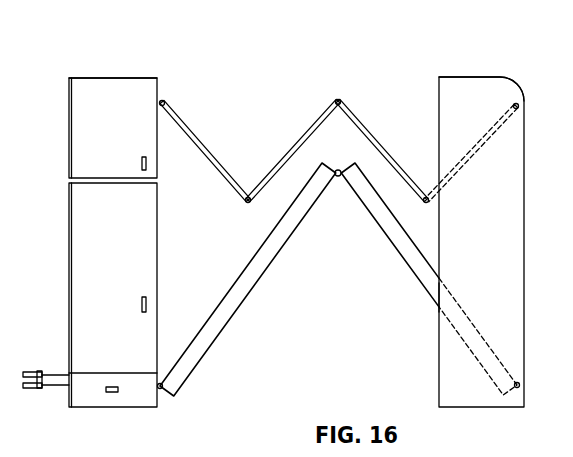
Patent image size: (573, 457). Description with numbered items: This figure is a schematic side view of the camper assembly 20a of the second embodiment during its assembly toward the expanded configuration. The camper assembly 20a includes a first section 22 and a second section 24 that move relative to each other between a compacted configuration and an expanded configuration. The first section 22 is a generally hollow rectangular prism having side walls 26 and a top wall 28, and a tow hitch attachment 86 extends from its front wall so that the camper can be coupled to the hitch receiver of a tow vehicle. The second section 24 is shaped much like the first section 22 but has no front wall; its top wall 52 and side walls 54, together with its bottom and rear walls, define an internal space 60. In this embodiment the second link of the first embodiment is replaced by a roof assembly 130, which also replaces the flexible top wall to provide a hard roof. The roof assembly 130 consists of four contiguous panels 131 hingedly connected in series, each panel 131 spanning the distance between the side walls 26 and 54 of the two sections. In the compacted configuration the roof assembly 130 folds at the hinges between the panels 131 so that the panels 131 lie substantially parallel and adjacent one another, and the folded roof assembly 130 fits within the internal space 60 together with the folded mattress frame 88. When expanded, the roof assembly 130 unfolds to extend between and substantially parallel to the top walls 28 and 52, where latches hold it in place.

The camper assembly 20a is at (502, 57).
The first section 22 is at (92, 220).
The second section 24 is at (481, 242).
The side walls 26 is at (90, 102).
The top wall 28 is at (88, 78).
The top wall 52 is at (462, 77).
The side walls 54 is at (493, 157).
The internal space 60 is at (432, 319).
The tow hitch attachment 86 is at (30, 372).
The mattress frame 88 is at (243, 303).
The roof assembly 130 is at (312, 117).
The panels 131 is at (277, 167).